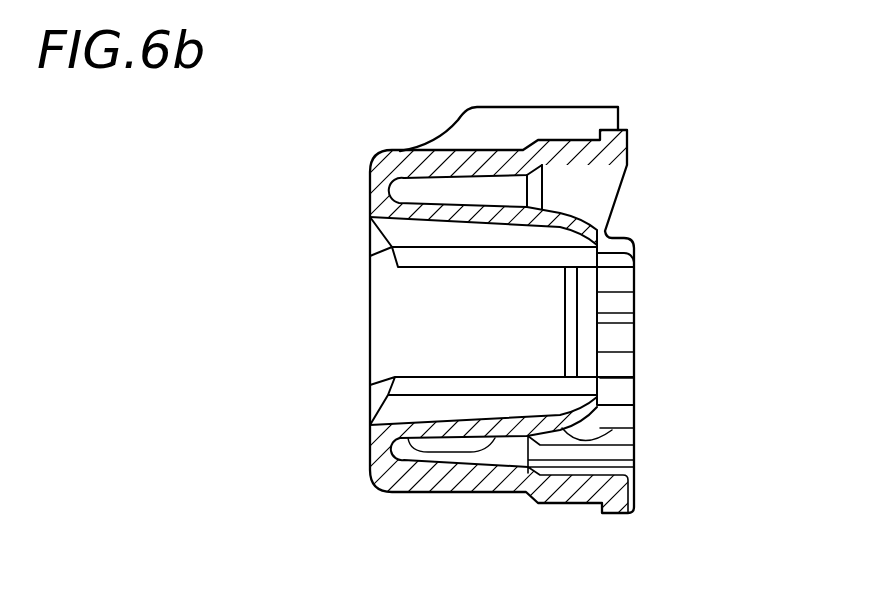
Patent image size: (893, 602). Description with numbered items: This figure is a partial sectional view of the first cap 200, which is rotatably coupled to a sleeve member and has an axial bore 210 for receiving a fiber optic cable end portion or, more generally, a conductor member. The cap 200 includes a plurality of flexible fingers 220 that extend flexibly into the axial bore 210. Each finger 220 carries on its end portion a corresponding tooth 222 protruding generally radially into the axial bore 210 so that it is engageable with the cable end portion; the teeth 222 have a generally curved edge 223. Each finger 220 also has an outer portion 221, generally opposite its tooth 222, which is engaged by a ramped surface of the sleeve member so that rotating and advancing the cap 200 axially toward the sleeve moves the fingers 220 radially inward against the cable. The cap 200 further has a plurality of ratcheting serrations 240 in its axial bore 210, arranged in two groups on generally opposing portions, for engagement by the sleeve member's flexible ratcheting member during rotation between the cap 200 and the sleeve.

The first cap 200 is at (368, 150).
The axial bore 210 is at (403, 313).
The fingers 220 is at (503, 438).
The outer portion 221 is at (568, 214).
The tooth 222 is at (590, 312).
The curved edge 223 is at (598, 336).
The ratcheting serrations 240 is at (623, 395).